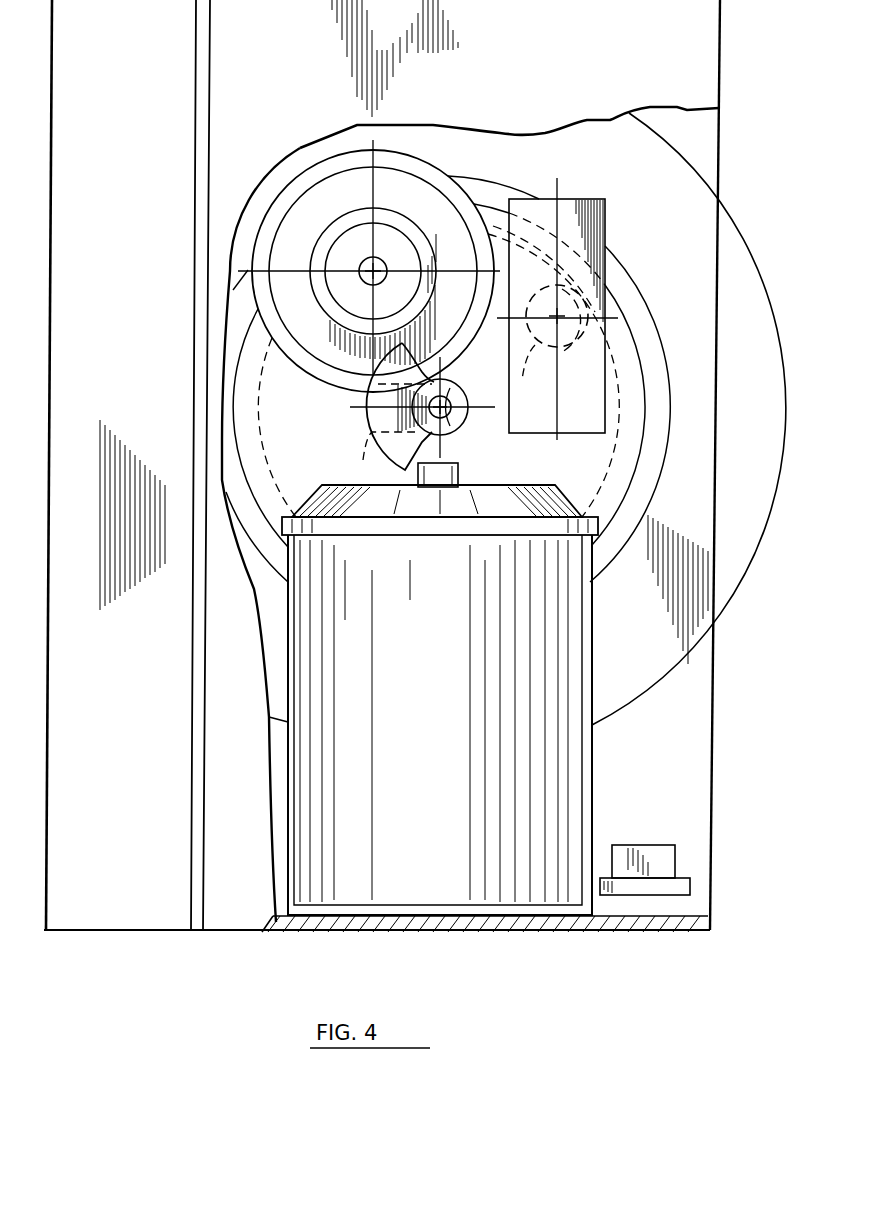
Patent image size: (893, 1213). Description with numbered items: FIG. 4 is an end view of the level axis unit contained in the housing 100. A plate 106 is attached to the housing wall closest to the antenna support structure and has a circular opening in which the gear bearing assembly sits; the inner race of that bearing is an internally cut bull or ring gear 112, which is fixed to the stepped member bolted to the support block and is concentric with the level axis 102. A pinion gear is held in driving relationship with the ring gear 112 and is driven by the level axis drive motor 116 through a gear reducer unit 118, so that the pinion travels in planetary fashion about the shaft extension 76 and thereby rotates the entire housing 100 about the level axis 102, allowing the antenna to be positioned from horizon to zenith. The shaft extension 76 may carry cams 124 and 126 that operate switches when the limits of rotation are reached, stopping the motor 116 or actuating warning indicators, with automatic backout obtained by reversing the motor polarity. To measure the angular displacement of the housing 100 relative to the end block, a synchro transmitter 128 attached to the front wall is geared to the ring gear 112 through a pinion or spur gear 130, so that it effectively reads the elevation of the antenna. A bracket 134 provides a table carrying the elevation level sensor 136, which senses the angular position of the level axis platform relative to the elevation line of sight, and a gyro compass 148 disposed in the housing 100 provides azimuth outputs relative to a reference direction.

The shaft extension 76 is at (455, 428).
The housing 100 is at (713, 762).
The level axis 102 is at (450, 392).
The plate 106 is at (733, 264).
The ring gear 112 is at (608, 480).
The level axis drive motor 116 is at (343, 247).
The gear reducer unit 118 is at (420, 160).
The cam 124 is at (377, 415).
The cam 126 is at (377, 428).
The synchro transmitter 128 is at (607, 231).
The spur gear 130 is at (550, 343).
The bracket 134 is at (692, 886).
The elevation level sensor 136 is at (647, 843).
The gyro compass 148 is at (450, 700).